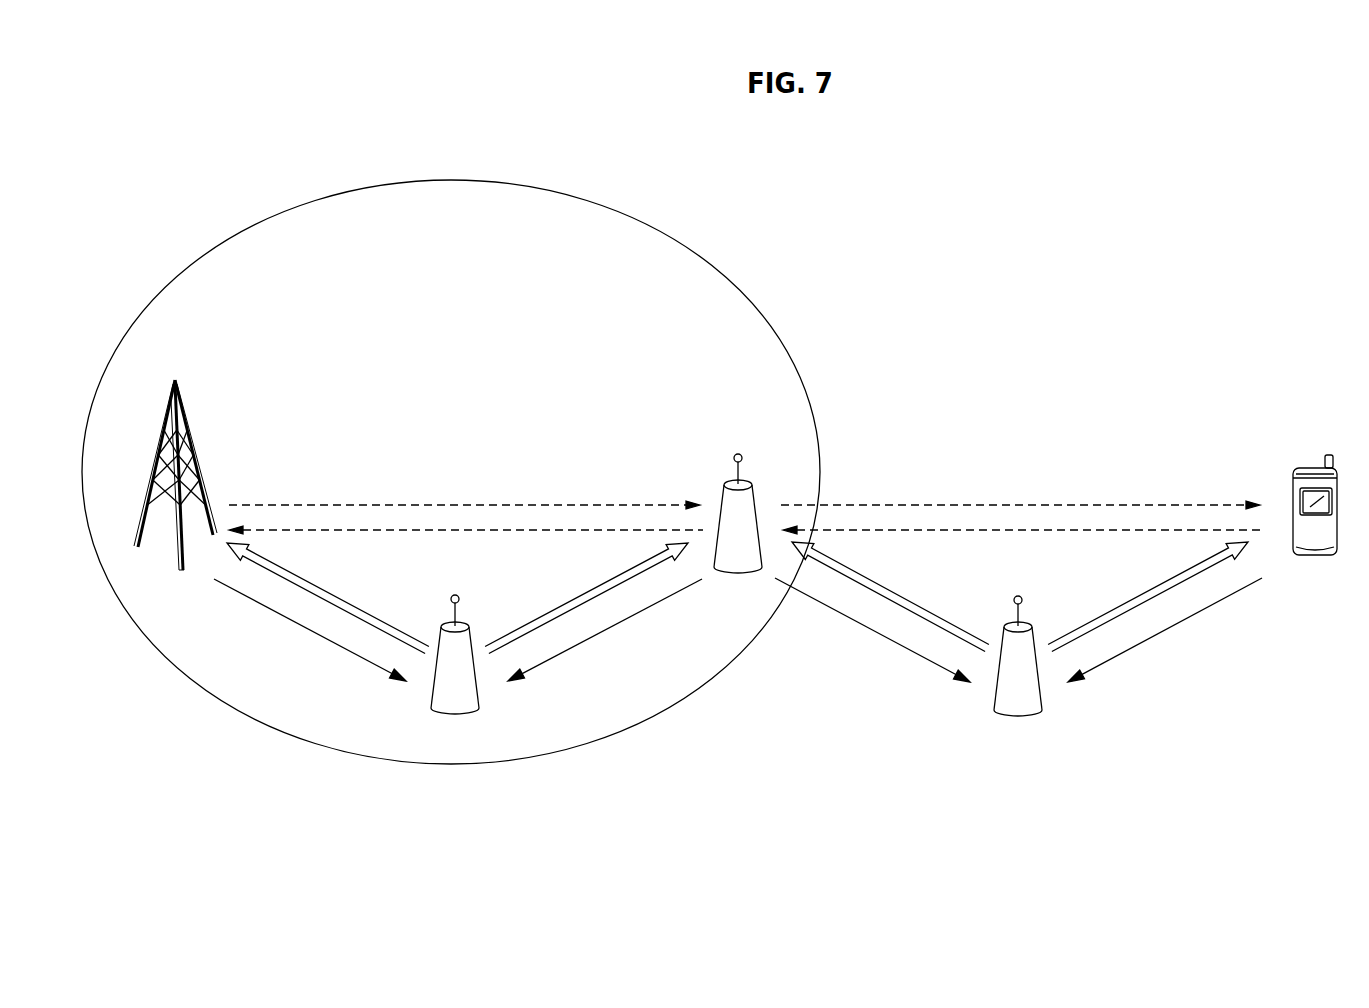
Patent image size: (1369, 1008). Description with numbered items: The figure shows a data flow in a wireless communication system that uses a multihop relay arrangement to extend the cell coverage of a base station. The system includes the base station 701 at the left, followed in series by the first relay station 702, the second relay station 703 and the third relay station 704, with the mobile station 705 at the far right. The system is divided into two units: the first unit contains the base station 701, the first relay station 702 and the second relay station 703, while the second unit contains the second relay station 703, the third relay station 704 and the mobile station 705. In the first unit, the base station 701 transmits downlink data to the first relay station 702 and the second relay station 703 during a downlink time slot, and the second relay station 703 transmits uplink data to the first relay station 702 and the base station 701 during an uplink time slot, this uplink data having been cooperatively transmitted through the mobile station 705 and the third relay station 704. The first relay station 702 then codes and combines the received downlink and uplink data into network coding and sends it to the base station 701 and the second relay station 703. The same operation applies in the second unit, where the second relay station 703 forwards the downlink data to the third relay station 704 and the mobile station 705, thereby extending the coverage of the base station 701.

The BS 701 is at (178, 342).
The RS1 702 is at (455, 750).
The RS2 703 is at (737, 417).
The RS3 704 is at (1018, 748).
The MS 705 is at (1313, 462).